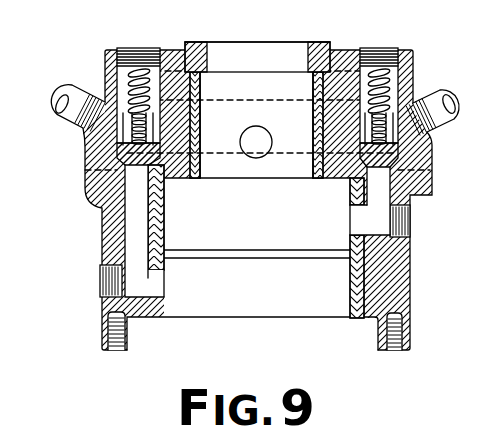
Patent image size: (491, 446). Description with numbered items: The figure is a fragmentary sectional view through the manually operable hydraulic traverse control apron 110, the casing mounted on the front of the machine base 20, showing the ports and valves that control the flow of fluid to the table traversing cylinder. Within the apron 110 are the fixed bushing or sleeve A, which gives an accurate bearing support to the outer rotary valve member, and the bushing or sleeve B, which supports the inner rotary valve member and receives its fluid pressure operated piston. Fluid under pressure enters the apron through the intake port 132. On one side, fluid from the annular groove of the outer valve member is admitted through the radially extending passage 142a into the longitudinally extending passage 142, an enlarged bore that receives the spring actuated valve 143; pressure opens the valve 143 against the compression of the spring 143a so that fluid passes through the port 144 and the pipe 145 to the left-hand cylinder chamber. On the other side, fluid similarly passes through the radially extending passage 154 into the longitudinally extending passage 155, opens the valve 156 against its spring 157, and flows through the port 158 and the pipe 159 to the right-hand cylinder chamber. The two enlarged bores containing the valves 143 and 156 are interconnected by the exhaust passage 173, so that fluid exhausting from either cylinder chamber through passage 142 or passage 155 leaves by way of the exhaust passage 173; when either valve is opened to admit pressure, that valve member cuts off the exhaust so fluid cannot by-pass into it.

The hydraulic traverse control apron 110 is at (411, 312).
The intake port 132 is at (247, 139).
The longitudinally extending passage 142 is at (132, 232).
The radially extending passage 142a is at (157, 285).
The valve 143 is at (128, 150).
The spring 143a is at (128, 90).
The port 144 is at (117, 122).
The pipe 145 is at (64, 99).
The radially extending passage 154 is at (355, 222).
The longitudinally extending passage 155 is at (377, 187).
The valve 156 is at (397, 159).
The spring 157 is at (397, 88).
The port 158 is at (430, 138).
The pipe 159 is at (478, 90).
The exhaust passage 173 is at (270, 70).
The bushing or sleeve A is at (363, 277).
The bushing or sleeve B is at (328, 46).
The machine base 20 is at (482, 260).